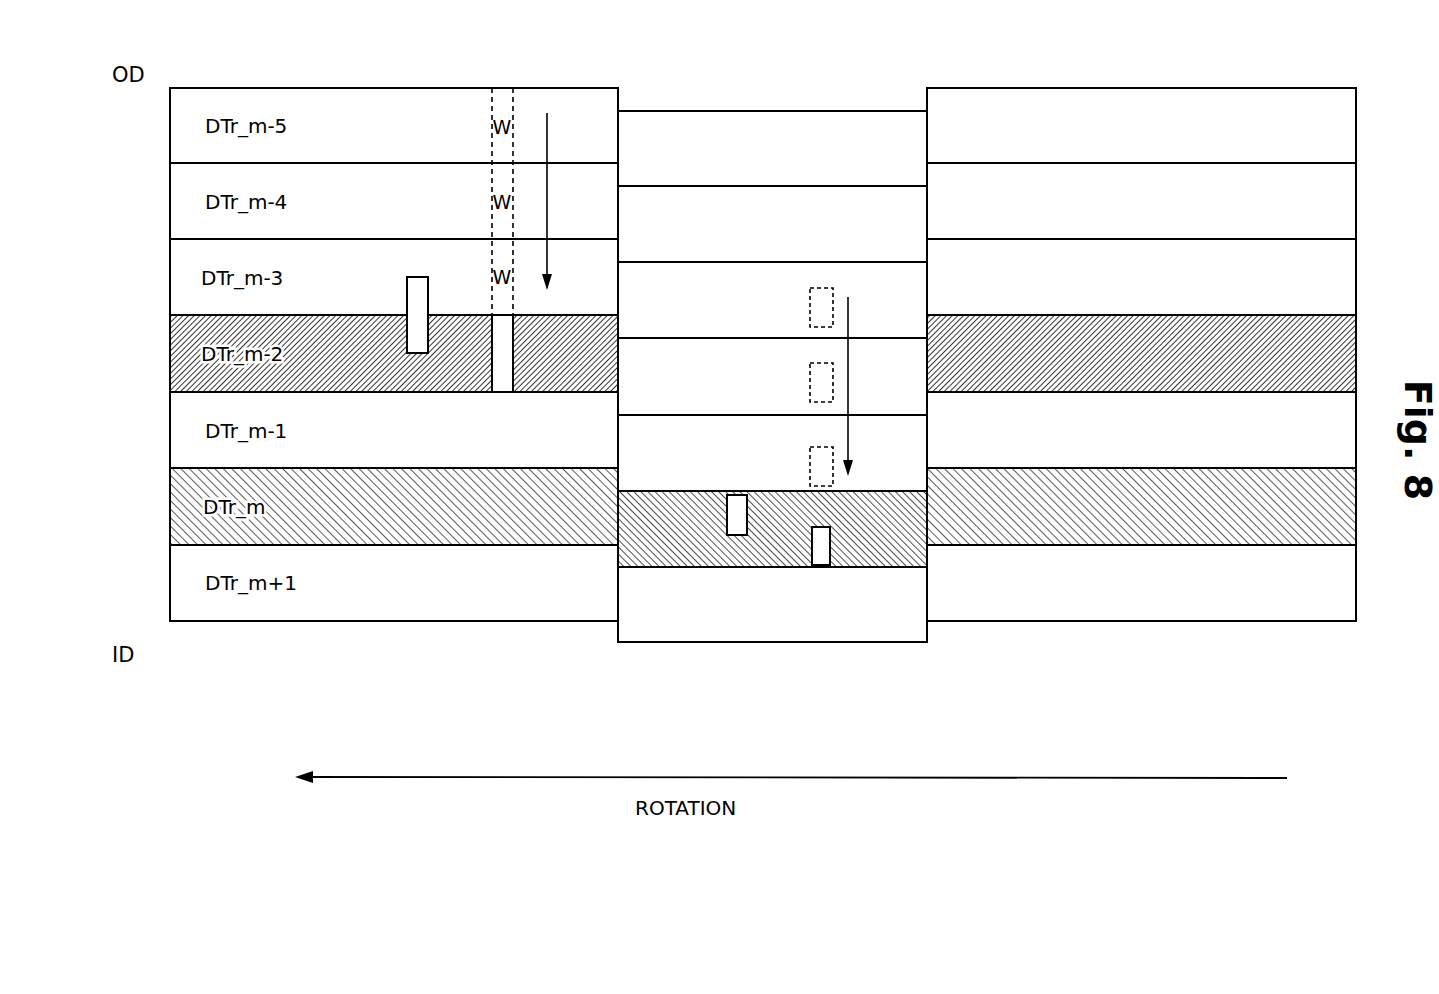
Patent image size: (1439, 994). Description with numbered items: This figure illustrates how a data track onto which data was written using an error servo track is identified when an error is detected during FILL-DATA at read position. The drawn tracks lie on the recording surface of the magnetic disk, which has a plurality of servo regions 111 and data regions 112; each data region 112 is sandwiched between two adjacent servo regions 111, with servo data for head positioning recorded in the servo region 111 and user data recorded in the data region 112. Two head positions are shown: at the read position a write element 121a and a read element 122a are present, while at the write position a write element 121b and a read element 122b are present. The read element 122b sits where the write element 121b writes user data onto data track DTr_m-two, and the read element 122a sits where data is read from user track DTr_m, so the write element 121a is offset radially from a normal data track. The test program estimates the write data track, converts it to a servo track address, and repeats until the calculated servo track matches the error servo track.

The servo region 111 is at (903, 650).
The data region 112 is at (1075, 635).
The write element 121a is at (417, 353).
The write element 121b is at (513, 392).
The read element 122a is at (737, 535).
The read element 122b is at (822, 565).